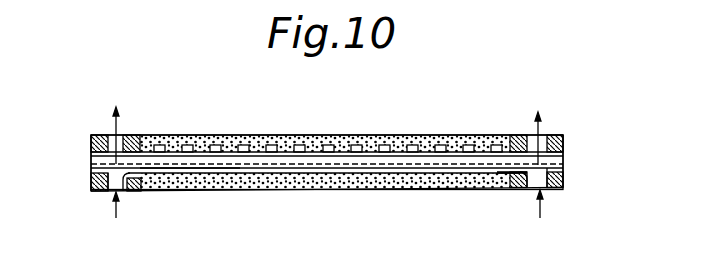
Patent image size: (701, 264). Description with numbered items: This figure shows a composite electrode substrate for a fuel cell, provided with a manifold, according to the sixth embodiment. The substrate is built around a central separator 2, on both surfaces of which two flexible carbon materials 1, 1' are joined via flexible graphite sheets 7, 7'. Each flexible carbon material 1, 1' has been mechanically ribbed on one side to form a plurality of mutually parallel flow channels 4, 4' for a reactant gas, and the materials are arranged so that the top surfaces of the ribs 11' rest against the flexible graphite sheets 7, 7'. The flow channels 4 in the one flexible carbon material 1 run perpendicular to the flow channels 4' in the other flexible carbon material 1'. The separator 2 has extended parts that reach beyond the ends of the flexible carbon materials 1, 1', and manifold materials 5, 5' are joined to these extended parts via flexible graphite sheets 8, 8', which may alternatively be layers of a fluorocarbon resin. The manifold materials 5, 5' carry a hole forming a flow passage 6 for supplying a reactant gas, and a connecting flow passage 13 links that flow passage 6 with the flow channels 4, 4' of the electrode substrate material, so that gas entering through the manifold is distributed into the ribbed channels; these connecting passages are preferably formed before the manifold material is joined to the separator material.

The flexible carbon material 1 is at (327, 192).
The flexible carbon material 1' is at (325, 117).
The separator 2 is at (101, 160).
The flow channel 4 is at (324, 204).
The flow channel 4' is at (351, 123).
The manifold material 5 is at (325, 200).
The manifold material 5' is at (325, 127).
The flow passage 6 is at (538, 178).
The flexible graphite sheet 7 is at (190, 199).
The flexible graphite sheet 7' is at (244, 128).
The flexible graphite sheet 8 is at (330, 175).
The flexible graphite sheet 8' is at (325, 138).
The rib 11' is at (328, 123).
The flow passage 13 is at (524, 176).